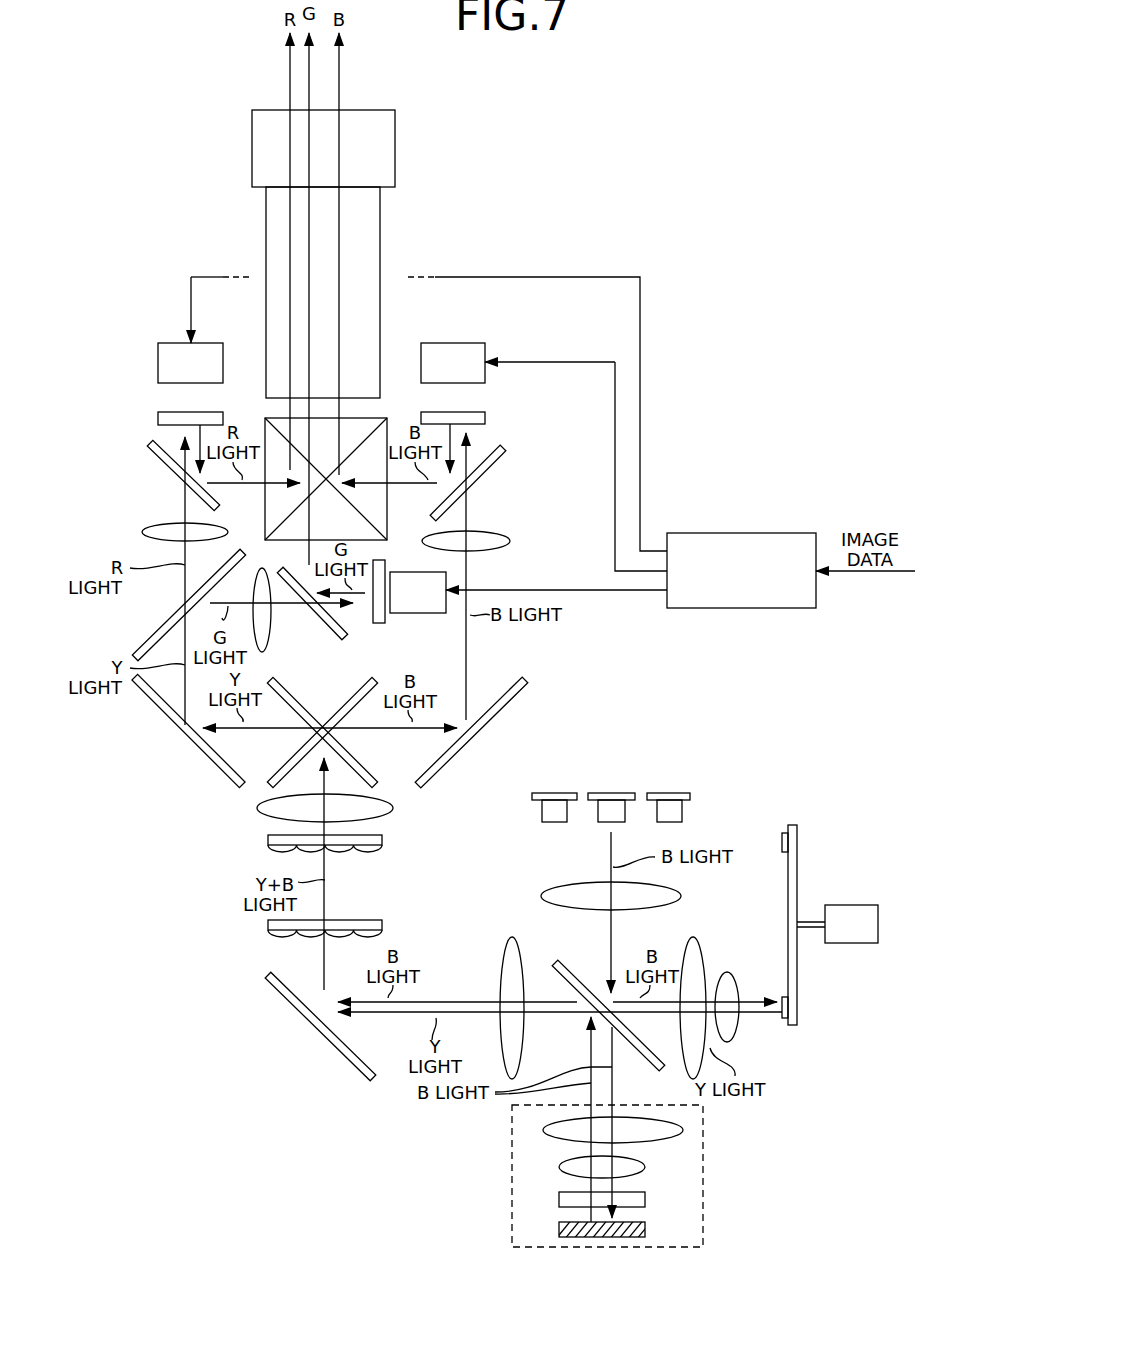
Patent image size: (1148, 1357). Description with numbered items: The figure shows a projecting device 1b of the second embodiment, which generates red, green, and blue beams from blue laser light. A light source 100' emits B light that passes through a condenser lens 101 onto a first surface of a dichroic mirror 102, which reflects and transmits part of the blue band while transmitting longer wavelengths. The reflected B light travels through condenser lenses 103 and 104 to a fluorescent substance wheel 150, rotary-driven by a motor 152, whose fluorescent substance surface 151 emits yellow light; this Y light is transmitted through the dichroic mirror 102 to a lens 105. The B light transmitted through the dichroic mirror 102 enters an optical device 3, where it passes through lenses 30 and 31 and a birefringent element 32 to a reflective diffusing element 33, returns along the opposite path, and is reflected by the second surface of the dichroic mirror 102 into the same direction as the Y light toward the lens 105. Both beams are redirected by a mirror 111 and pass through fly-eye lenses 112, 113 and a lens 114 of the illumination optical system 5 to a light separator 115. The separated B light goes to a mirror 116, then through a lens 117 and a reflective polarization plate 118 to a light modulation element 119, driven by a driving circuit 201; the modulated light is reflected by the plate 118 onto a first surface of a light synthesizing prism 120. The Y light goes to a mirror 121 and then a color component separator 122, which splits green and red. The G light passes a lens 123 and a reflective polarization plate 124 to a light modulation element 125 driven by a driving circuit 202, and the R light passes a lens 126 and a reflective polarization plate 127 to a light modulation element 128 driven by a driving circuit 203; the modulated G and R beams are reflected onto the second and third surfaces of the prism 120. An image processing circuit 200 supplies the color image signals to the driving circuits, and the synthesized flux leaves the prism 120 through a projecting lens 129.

The projecting device 1b is at (810, 113).
The projecting lens 129 is at (380, 220).
The driving circuit 203 is at (168, 341).
The driving circuit 201 is at (465, 343).
The driving circuit 202 is at (447, 578).
The light synthesizing prism 120 is at (288, 417).
The light modulation element 128 is at (158, 417).
The light modulation element 119 is at (487, 417).
The light modulation element 125 is at (388, 615).
The reflective polarization plate 127 is at (155, 455).
The reflective polarization plate 118 is at (493, 463).
The lens 126 is at (142, 532).
The lens 117 is at (512, 541).
The lens 123 is at (268, 630).
The image processing circuit 200 is at (748, 533).
The color component separator 122 is at (150, 640).
The reflective polarization plate 124 is at (352, 630).
The mirror 121 is at (148, 690).
The light separator 115 is at (323, 703).
The mirror 116 is at (505, 688).
The lens 114 is at (257, 808).
The fly-eye lens 113 is at (268, 840).
The fly-eye lens 112 is at (268, 925).
The mirror 111 is at (342, 1053).
The illumination optical system 5 is at (128, 788).
The light source 100' is at (637, 768).
The condenser lens 101 is at (553, 885).
The lens 105 is at (500, 965).
The dichroic mirror 102 is at (572, 965).
The condenser lens 103 is at (700, 950).
The condenser lens 104 is at (740, 980).
The fluorescent substance wheel 150 is at (800, 830).
The fluorescent substance surface 151 is at (783, 830).
The motor 152 is at (880, 922).
The optical device 3 is at (704, 1225).
The lens 30 is at (543, 1130).
The lens 31 is at (560, 1167).
The birefringent element 32 is at (559, 1200).
The reflective diffusing element 33 is at (565, 1240).